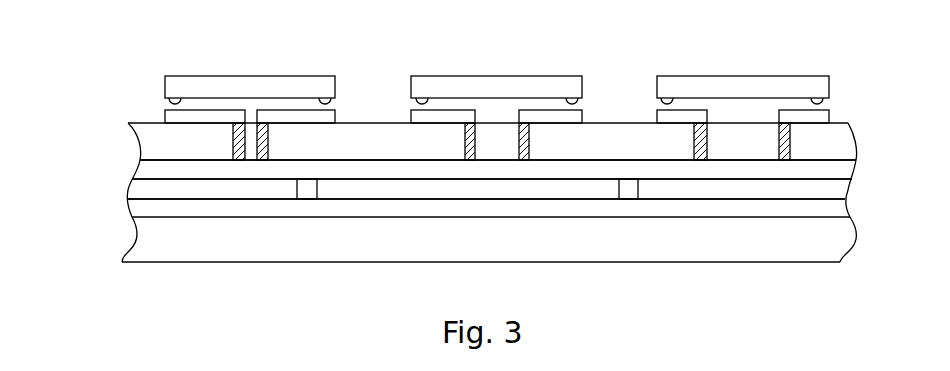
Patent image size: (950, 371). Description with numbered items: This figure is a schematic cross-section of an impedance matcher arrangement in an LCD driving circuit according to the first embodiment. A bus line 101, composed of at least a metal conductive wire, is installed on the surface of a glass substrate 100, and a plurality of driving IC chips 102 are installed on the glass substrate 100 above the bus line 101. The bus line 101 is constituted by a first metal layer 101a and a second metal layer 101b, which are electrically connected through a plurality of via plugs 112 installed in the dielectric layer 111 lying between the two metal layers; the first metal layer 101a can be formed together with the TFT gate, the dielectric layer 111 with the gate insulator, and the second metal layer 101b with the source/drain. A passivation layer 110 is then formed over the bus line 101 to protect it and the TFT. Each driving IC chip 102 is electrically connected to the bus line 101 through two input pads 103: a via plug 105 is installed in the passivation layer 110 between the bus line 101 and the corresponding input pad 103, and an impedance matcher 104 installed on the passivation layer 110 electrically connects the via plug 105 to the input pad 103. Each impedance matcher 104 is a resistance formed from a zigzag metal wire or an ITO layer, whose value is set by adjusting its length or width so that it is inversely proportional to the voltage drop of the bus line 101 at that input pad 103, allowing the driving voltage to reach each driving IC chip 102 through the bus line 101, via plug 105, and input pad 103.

The glass substrate 100 is at (517, 249).
The bus line 101 is at (58, 195).
The first metal layer 101a is at (146, 211).
The second metal layer 101b is at (146, 172).
The driving IC chip 102 is at (263, 84).
The input pad 103 is at (167, 103).
The impedance matcher 104 is at (175, 121).
The via plug 105 is at (233, 143).
The passivation layer 110 is at (838, 138).
The dielectric layer 111 is at (835, 188).
The via plug 112 is at (308, 197).